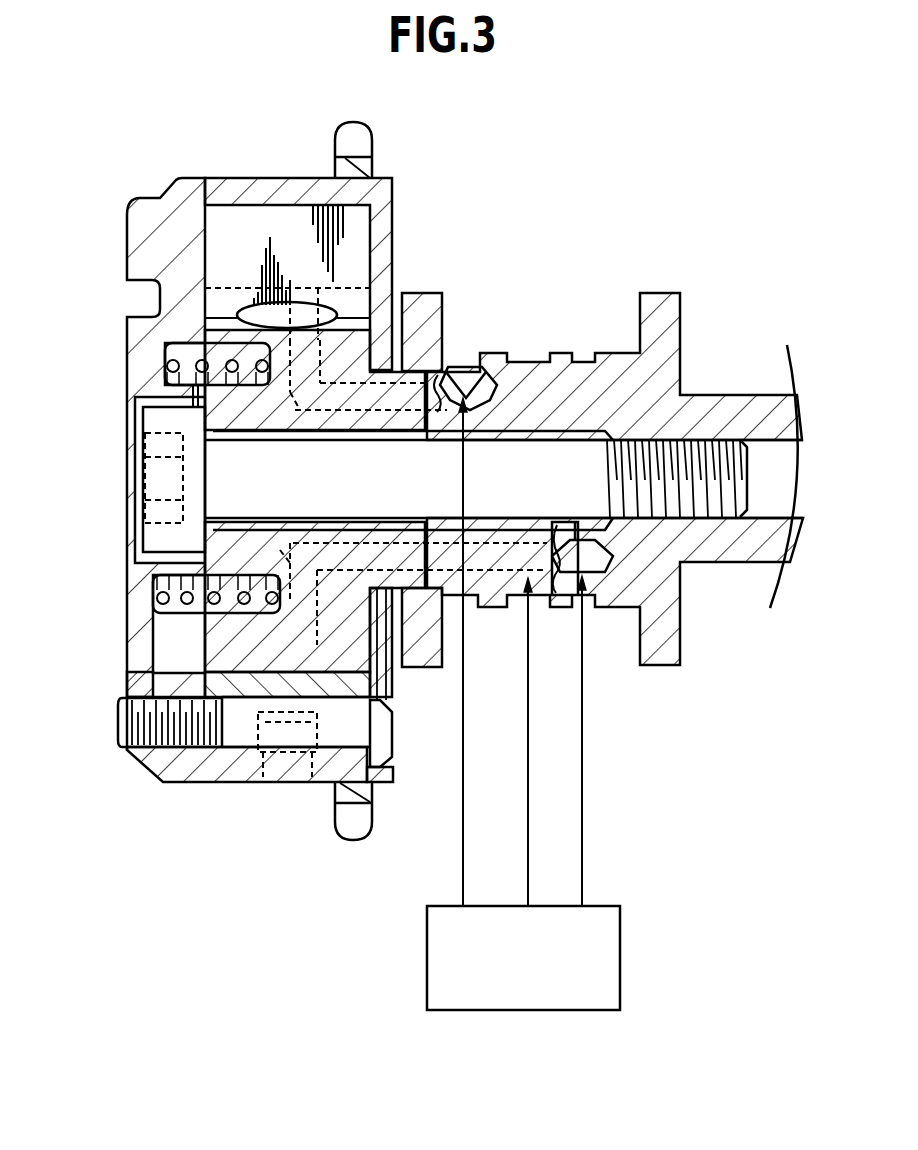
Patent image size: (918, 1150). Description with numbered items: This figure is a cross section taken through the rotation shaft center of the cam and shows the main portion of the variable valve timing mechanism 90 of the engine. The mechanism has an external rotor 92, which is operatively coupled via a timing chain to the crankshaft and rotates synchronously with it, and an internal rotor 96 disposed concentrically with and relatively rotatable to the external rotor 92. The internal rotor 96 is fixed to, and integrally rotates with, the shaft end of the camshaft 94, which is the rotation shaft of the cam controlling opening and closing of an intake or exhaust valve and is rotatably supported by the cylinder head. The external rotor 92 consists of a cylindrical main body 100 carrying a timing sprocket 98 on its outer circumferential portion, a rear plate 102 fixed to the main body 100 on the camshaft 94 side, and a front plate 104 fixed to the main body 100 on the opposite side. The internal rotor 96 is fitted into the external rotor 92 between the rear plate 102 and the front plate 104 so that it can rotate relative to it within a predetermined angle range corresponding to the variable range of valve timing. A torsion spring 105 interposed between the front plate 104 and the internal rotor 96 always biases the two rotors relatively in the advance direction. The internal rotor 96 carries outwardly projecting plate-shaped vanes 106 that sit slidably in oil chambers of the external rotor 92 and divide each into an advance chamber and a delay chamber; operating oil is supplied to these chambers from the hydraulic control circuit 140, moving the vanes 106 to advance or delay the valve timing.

The variable valve timing mechanism 90 is at (686, 193).
The external rotor 92 is at (196, 808).
The camshaft 94 is at (724, 395).
The internal rotor 96 is at (215, 630).
The timing sprocket 98 is at (352, 822).
The main body 100 is at (215, 686).
The rear plate 102 is at (383, 224).
The front plate 104 is at (133, 236).
The torsion spring 105 is at (168, 603).
The vanes 106 is at (382, 258).
The hydraulic control circuit 140 is at (605, 932).